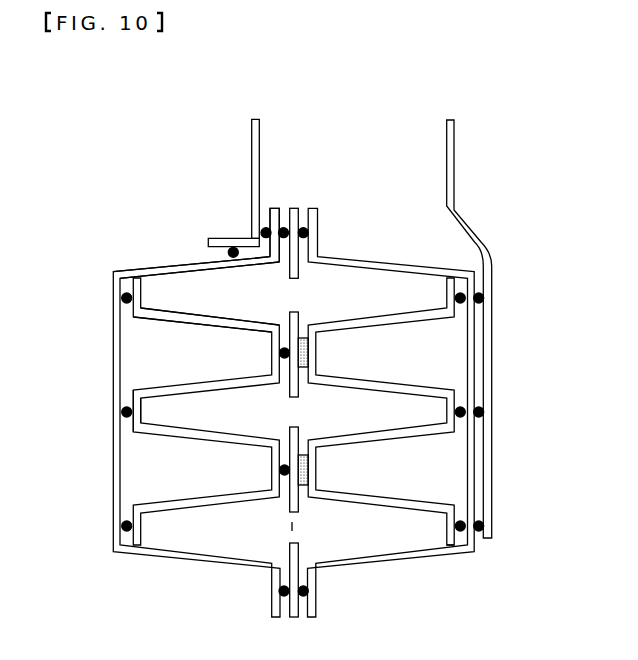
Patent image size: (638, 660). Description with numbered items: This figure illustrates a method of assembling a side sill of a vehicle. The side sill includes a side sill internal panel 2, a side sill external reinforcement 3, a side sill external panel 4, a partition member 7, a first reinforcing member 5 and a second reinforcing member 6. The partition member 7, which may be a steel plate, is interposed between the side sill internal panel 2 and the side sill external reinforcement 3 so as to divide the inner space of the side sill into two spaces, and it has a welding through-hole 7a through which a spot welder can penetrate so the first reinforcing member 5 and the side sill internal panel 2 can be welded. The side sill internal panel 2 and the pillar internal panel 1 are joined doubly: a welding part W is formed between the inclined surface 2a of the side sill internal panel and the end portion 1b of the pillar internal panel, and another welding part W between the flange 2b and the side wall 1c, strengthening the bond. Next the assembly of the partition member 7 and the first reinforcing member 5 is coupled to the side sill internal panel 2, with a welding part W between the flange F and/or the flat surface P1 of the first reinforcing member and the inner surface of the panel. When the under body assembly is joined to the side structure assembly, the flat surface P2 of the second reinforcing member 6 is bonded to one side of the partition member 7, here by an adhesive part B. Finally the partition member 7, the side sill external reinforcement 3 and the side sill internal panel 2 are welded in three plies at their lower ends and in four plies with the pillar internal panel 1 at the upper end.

The pillar internal panel 1 is at (134, 158).
The end portion of the pillar internal panel 1b is at (231, 238).
The side wall of the pillar internal panel 1c is at (252, 150).
The side sill internal panel 2 is at (113, 491).
The inclined surface of the side sill internal panel 2a is at (113, 274).
The flange of the side sill internal panel 2b is at (272, 208).
The side sill external reinforcement 3 is at (432, 262).
The side sill external panel 4 is at (455, 188).
The first reinforcing member 5 is at (207, 508).
The second reinforcing member 6 is at (380, 508).
The partition member 7 is at (300, 270).
The welding through-hole 7a is at (291, 527).
The adhesive part B is at (308, 351).
The flange of the first reinforcing member F is at (447, 527).
The flat surface of the first reinforcing member P1 is at (140, 403).
The flat surface of the second reinforcing member P2 is at (270, 343).
The welding part W is at (302, 226).